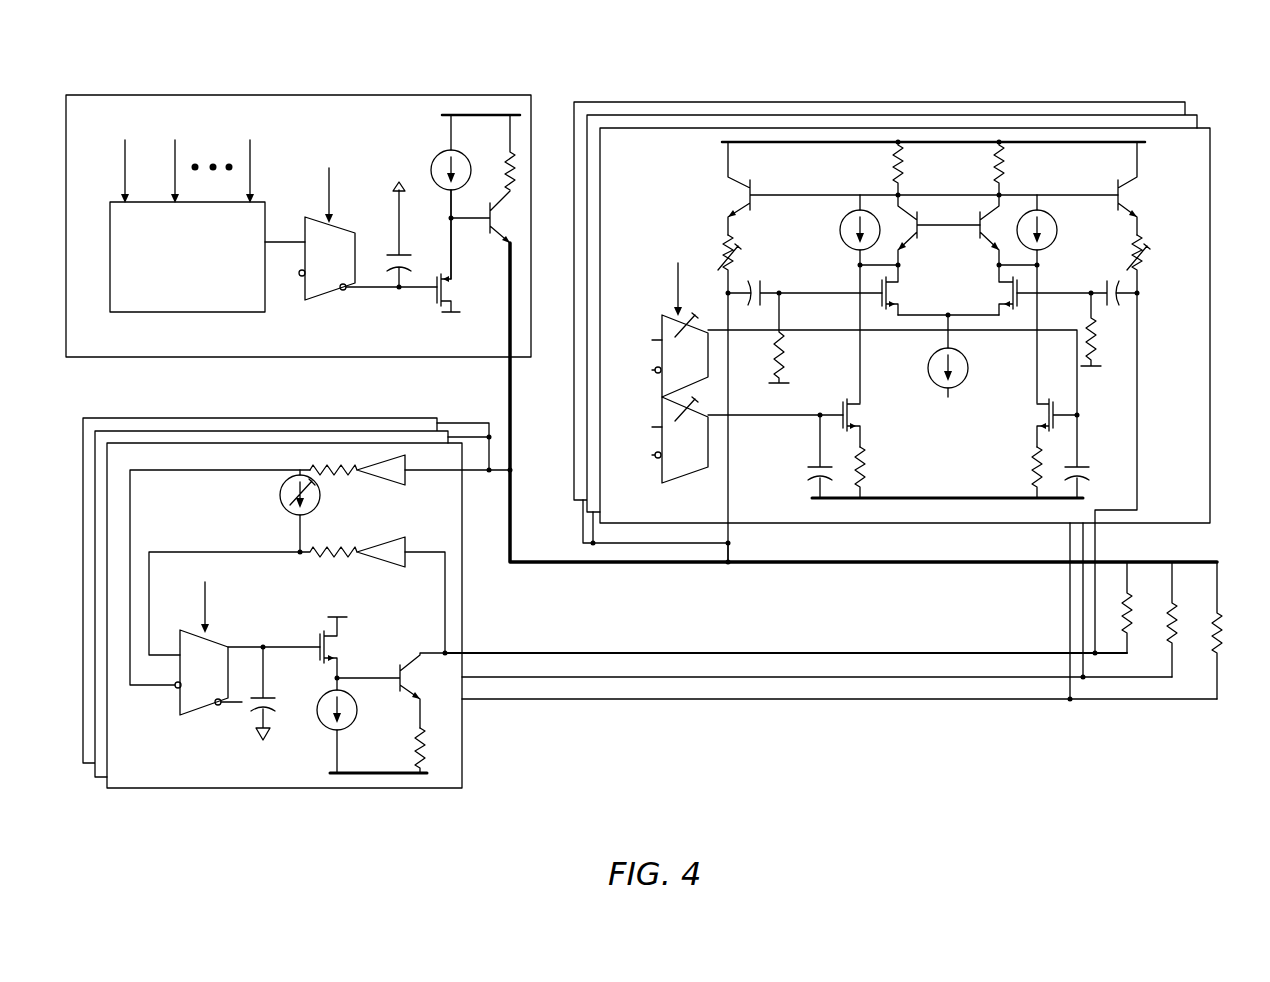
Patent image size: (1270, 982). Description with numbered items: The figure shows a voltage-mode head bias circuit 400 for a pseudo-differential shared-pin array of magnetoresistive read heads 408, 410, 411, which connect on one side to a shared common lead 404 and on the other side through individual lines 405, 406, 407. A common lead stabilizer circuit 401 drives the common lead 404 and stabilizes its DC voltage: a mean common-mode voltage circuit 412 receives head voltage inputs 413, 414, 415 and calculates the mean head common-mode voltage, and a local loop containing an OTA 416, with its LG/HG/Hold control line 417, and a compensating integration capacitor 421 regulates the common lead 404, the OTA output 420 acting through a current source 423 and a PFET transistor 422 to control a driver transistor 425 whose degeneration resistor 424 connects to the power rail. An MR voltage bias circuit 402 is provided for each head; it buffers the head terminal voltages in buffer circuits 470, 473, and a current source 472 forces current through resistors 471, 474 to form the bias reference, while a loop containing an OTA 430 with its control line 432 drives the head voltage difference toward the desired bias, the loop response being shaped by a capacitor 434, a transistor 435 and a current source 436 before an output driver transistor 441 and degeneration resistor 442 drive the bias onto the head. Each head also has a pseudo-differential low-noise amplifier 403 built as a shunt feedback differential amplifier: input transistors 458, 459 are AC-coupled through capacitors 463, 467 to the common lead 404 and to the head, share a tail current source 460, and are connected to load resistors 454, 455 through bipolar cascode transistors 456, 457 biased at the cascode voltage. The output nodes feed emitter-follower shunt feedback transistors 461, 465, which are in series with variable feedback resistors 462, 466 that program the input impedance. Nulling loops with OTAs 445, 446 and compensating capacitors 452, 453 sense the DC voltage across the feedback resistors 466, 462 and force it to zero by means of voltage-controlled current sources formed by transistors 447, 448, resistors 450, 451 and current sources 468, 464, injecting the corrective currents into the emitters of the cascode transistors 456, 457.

The voltage-mode head bias circuit 400 is at (1152, 62).
The common lead stabilizer circuit 401 is at (140, 350).
The MR voltage bias circuit 402 is at (167, 780).
The low-noise amplifier 403 is at (707, 519).
The common lead 404 is at (627, 564).
The signal line 405 is at (785, 652).
The signal line 406 is at (830, 675).
The signal line 407 is at (872, 699).
The MR read head 408 is at (1135, 608).
The MR read head 410 is at (1180, 618).
The MR read head 411 is at (1235, 618).
The mean common-mode voltage circuit 412 is at (205, 302).
The input voltage 413 is at (123, 162).
The input voltage 414 is at (173, 161).
The input voltage 415 is at (248, 162).
The OTA 416 is at (347, 280).
The HG/LG/Hold control signal 417 is at (333, 178).
The output of the OTA 420 is at (375, 290).
The compensating integration capacitor 421 is at (403, 250).
The transistor 422 is at (432, 296).
The current source 423 is at (433, 178).
The degeneration resistor 424 is at (508, 160).
The driver transistor 425 is at (490, 244).
The OTA 430 is at (222, 695).
The HG/LG/Hold control signal 432 is at (183, 553).
The capacitor 434 is at (270, 693).
The transistor 435 is at (318, 633).
The current source 436 is at (318, 720).
The output driver transistor 441 is at (398, 667).
The degeneration resistor 442 is at (415, 740).
The OTA 445 is at (702, 377).
The OTA 446 is at (702, 464).
The transistor 447 is at (1058, 407).
The transistor 448 is at (840, 408).
The resistor 450 is at (1032, 457).
The resistor 451 is at (870, 475).
The compensating capacitor 452 is at (1087, 459).
The compensating capacitor 453 is at (813, 459).
The load resistor 454 is at (895, 155).
The load resistor 455 is at (1003, 155).
The cascode transistor 456 is at (921, 240).
The cascode transistor 457 is at (977, 240).
The input transistor 458 is at (872, 298).
The input transistor 459 is at (1020, 298).
The tail current source 460 is at (930, 377).
The emitter-follower transistor 461 is at (752, 183).
The variable feedback resistor 462 is at (740, 258).
The AC coupling capacitor 463 is at (767, 283).
The current source 464 is at (840, 228).
The emitter-follower transistor 465 is at (1117, 183).
The variable feedback resistor 466 is at (1147, 260).
The AC coupling capacitor 467 is at (1102, 282).
The current source 468 is at (1055, 243).
The buffer circuit 470 is at (407, 482).
The resistor 471 is at (328, 476).
The current source 472 is at (283, 503).
The buffer circuit 473 is at (407, 565).
The resistor 474 is at (328, 558).